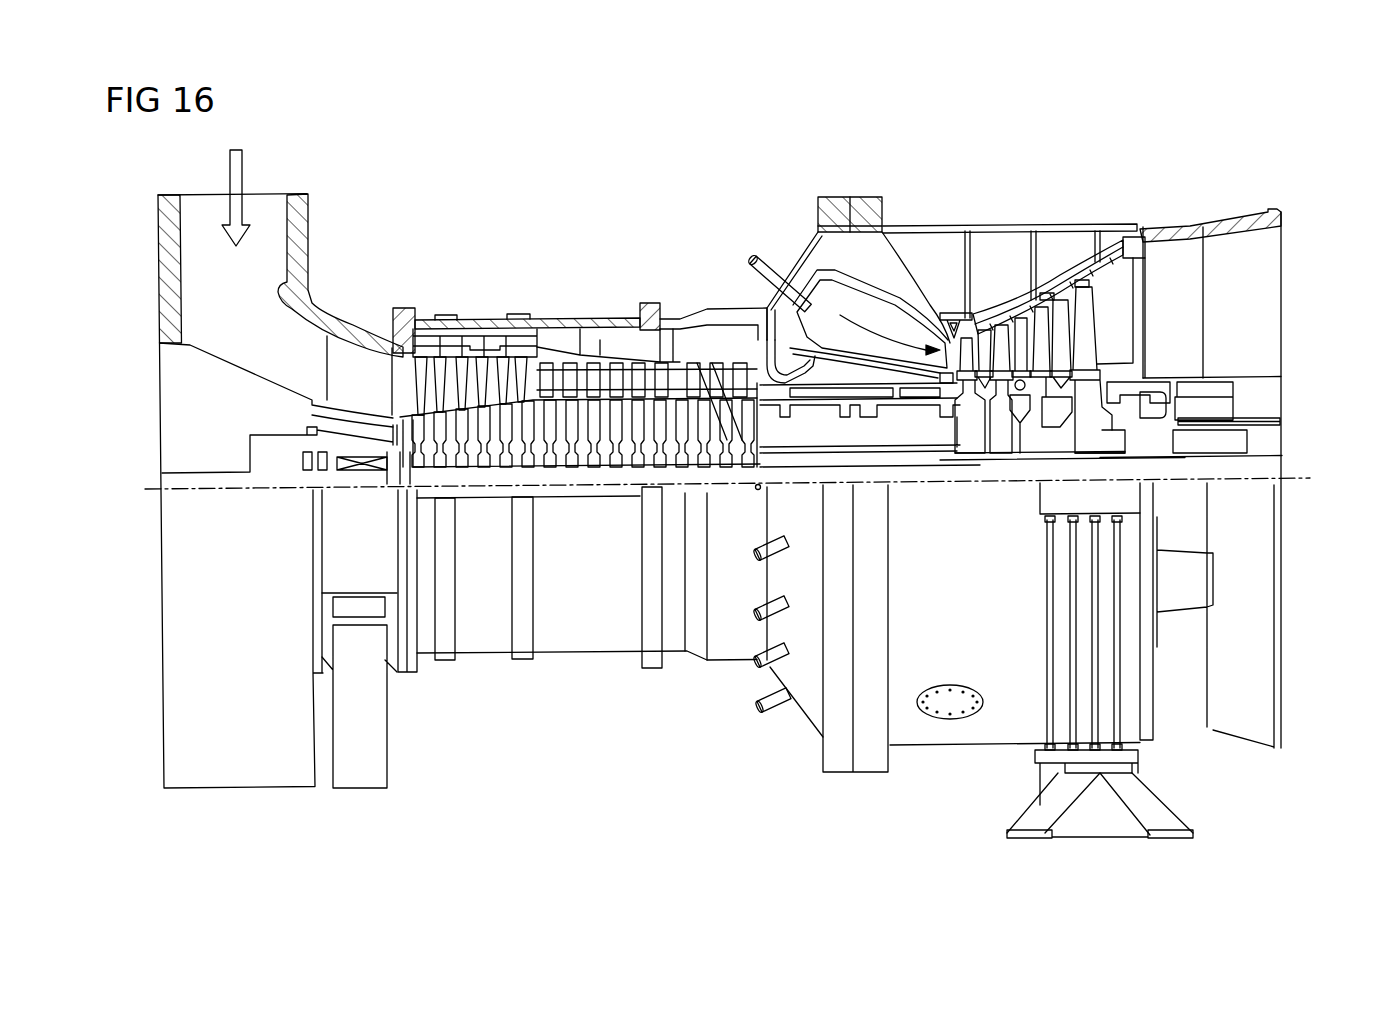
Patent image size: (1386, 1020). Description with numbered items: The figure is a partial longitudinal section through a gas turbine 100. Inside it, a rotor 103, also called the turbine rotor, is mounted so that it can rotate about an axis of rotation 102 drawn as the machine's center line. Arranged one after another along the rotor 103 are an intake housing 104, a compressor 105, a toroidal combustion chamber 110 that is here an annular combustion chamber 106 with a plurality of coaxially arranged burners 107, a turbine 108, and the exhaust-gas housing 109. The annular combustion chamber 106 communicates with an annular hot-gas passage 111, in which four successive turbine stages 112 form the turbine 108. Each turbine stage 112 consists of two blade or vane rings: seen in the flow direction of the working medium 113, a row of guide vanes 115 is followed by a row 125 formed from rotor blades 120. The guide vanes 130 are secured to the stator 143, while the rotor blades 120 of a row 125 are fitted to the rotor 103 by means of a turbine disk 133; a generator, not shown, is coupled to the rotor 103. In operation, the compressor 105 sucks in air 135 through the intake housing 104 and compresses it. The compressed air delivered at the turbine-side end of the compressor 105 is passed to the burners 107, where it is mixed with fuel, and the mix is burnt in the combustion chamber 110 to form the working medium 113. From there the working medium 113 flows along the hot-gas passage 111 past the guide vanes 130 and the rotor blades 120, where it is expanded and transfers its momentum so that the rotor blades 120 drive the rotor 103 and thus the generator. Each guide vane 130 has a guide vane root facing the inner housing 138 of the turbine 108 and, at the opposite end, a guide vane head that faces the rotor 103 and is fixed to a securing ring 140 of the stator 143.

The gas turbine 100 is at (572, 205).
The axis of rotation 102 is at (147, 488).
The rotor 103 is at (770, 460).
The intake housing 104 is at (298, 258).
The compressor 105 is at (493, 300).
The annular combustion chamber 106 is at (910, 313).
The burners 107 is at (757, 260).
The turbine 108 is at (968, 195).
The exhaust-gas housing 109 is at (1190, 222).
The combustion chamber 110 is at (848, 300).
The hot-gas passage 111 is at (1110, 312).
The turbine stage 112 is at (1092, 195).
The working medium 113 is at (873, 330).
The row of guide vanes 115 is at (1058, 262).
The rotor blades 120 is at (1010, 380).
The row of rotor blades 125 is at (1115, 242).
The guide vanes 130 is at (982, 340).
The turbine disk 133 is at (1090, 443).
The air 135 is at (244, 183).
The inner housing 138 is at (1000, 275).
The securing ring 140 is at (945, 368).
The stator 143 is at (933, 222).